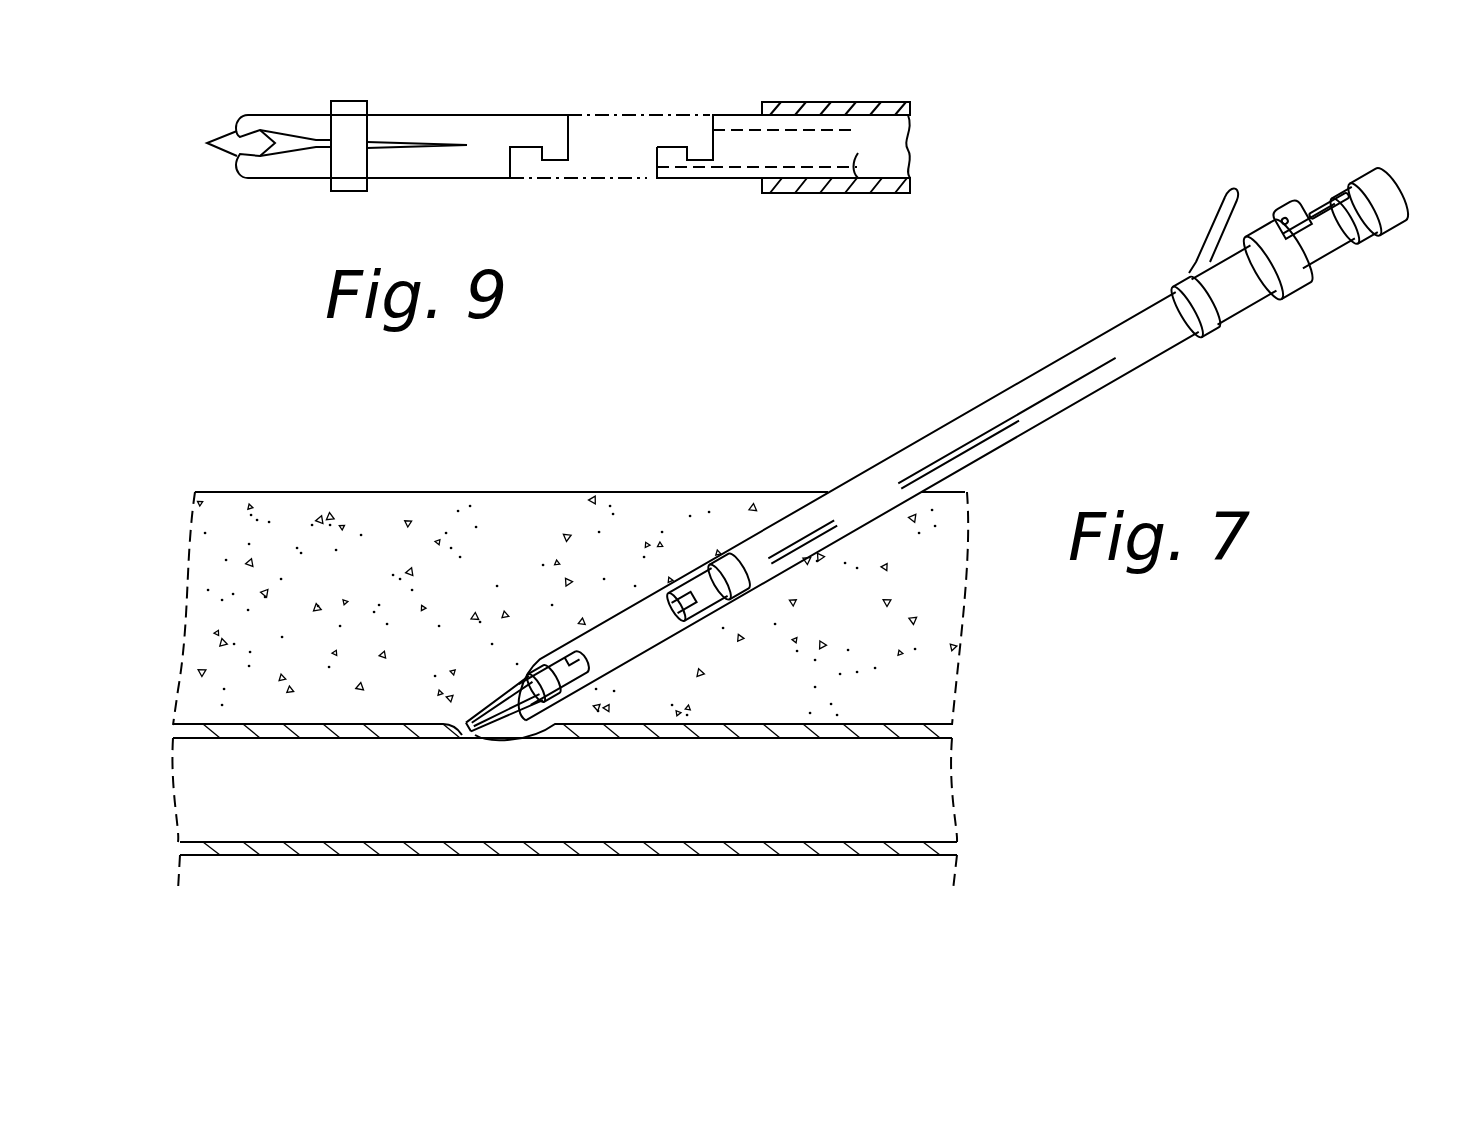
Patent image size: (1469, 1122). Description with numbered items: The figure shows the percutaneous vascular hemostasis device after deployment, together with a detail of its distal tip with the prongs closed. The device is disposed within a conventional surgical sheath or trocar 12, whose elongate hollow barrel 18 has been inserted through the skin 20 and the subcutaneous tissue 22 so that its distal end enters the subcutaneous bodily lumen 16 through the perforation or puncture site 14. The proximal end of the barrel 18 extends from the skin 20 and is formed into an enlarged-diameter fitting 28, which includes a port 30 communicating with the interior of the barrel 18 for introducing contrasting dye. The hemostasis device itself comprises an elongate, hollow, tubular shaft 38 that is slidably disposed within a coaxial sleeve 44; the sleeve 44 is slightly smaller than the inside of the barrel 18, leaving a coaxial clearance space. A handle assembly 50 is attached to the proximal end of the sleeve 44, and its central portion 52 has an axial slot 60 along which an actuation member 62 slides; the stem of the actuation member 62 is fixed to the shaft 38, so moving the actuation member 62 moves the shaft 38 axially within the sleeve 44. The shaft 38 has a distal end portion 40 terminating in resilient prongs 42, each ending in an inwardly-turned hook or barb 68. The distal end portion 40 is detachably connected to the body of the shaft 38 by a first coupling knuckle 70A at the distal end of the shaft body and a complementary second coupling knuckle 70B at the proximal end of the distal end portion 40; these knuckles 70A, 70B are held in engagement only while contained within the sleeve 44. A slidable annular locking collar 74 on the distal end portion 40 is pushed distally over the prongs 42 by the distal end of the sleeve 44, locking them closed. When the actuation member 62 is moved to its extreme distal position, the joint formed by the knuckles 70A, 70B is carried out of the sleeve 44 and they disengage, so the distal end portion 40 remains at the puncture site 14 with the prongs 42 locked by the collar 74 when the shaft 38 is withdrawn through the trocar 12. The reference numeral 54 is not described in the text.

In FIG. 7, the surgical sheath or trocar 12 is at (1180, 282).
In FIG. 7, the perforation or puncture site 14 is at (473, 727).
In FIG. 7, the subcutaneous bodily lumen 16 is at (857, 857).
In FIG. 7, the barrel 18 is at (1145, 342).
In FIG. 7, the skin 20 is at (550, 490).
In FIG. 7, the subcutaneous tissue 22 is at (491, 589).
In FIG. 7, the enlarged-diameter fitting 28 is at (1237, 303).
In FIG. 7, the port 30 is at (1210, 242).
In FIG. 9, the shaft 38 is at (733, 180).
In FIG. 7, the shaft 38 is at (695, 588).
In FIG. 9, the distal end portion 40 is at (462, 113).
In FIG. 7, the distal end portion 40 is at (557, 667).
In FIG. 9, the resilient prongs 42 is at (277, 113).
In FIG. 7, the resilient prongs 42 is at (483, 704).
In FIG. 9, the coaxial sleeve 44 is at (830, 100).
In FIG. 7, the coaxial sleeve 44 is at (720, 573).
In FIG. 7, the handle assembly 50 is at (1373, 223).
In FIG. 7, the central portion 52 is at (1323, 255).
In FIG. 7, the collar 54 is at (1282, 275).
In FIG. 7, the axial slot 60 is at (1317, 213).
In FIG. 7, the actuation member 62 is at (1283, 222).
In FIG. 9, the inwardly-turned hook or barb 68 is at (204, 143).
In FIG. 9, the first coupling knuckle 70A is at (668, 145).
In FIG. 9, the second coupling knuckle 70B is at (553, 162).
In FIG. 9, the slidable annular locking collar 74 is at (352, 100).
In FIG. 7, the slidable annular locking collar 74 is at (527, 670).